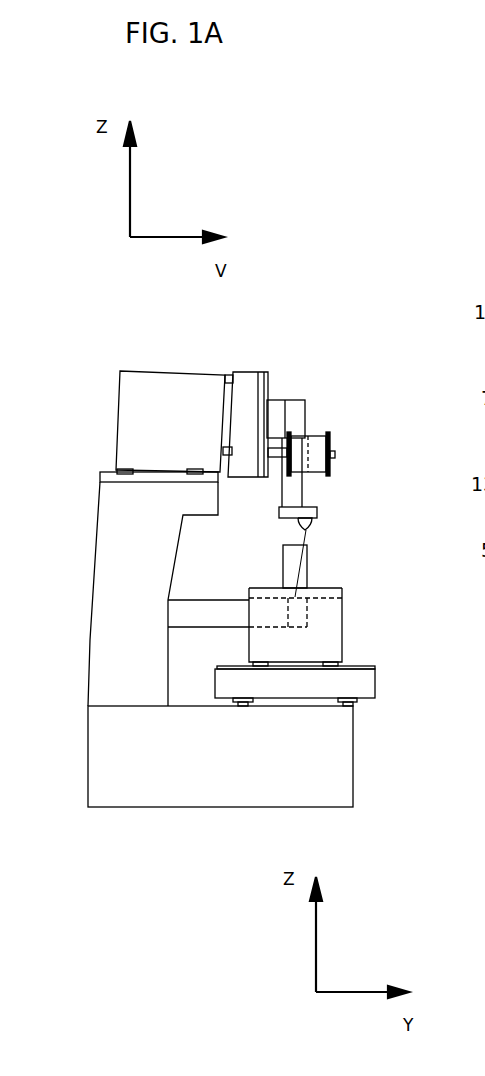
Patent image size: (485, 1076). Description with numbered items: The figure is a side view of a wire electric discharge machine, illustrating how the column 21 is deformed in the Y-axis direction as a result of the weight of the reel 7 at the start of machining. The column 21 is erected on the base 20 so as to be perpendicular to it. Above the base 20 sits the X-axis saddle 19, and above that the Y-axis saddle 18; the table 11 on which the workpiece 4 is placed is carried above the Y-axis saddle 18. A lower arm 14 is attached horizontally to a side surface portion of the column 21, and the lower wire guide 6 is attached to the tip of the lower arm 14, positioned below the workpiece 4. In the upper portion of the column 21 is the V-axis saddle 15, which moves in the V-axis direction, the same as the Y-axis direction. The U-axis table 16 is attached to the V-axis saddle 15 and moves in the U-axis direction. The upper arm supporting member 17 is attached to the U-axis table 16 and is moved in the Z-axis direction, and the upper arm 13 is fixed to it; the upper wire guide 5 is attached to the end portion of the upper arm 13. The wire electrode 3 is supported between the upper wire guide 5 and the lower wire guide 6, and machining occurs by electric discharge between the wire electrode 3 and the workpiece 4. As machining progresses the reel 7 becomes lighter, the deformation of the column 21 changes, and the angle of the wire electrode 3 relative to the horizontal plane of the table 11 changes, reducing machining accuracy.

The wire electrode 3 is at (308, 530).
The workpiece 4 is at (308, 568).
The upper wire guide 5 is at (313, 523).
The lower wire guide 6 is at (293, 596).
The reel 7 is at (318, 437).
The table 11 is at (343, 592).
The upper arm 13 is at (311, 507).
The lower arm 14 is at (207, 614).
The V-axis saddle 15 is at (155, 383).
The U-axis table 16 is at (249, 383).
The upper arm supporting member 17 is at (295, 405).
The Y-axis saddle 18 is at (342, 650).
The X-axis saddle 19 is at (375, 685).
The base 20 is at (210, 782).
The column 21 is at (110, 565).